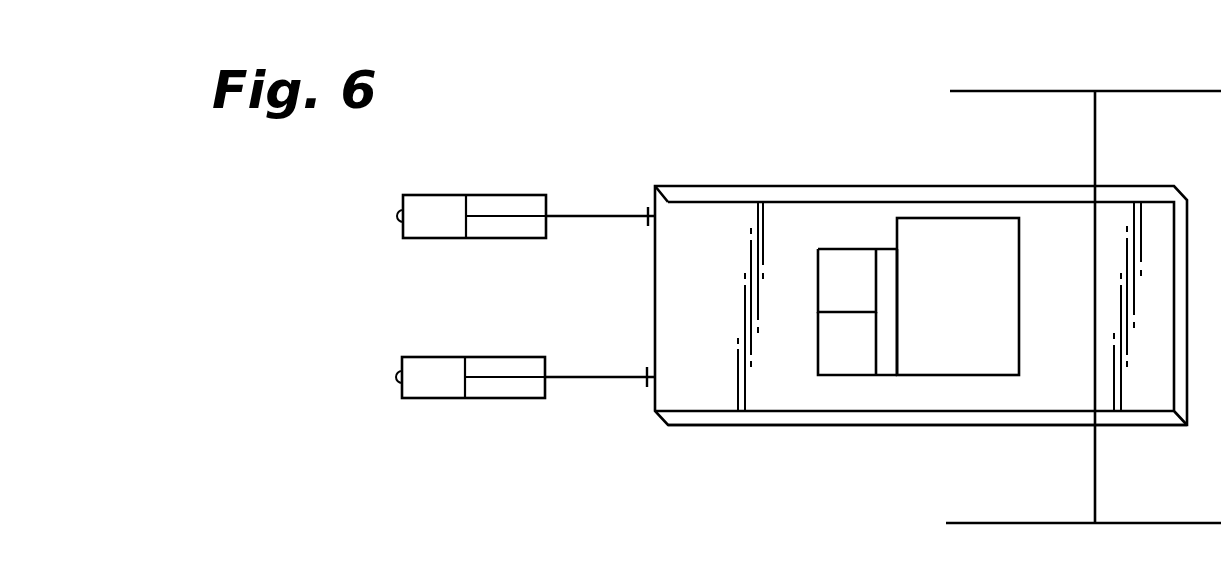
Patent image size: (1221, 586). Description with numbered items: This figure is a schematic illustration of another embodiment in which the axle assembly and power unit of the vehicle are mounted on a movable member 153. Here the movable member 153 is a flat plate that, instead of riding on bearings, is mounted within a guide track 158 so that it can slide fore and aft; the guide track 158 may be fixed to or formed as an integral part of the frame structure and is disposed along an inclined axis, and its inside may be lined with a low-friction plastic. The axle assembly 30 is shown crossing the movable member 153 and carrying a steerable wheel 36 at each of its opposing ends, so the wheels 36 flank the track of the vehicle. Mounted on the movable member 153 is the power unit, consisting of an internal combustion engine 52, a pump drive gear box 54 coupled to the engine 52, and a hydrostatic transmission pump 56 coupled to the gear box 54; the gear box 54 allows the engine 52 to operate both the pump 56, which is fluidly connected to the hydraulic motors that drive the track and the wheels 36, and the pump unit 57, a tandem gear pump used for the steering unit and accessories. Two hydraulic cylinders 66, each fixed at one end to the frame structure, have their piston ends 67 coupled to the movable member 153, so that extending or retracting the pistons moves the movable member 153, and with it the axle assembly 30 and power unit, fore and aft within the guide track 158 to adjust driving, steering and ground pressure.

The axle assembly 30 is at (1096, 145).
The wheel 36 is at (1166, 91).
The internal combustion engine 52 is at (946, 303).
The pump drive gear box 54 is at (884, 249).
The hydrostatic transmission pump 56 is at (833, 357).
The pump unit 57 is at (833, 294).
The hydraulic cylinder 66 is at (425, 195).
The piston end 67 is at (585, 216).
The movable member 153 is at (704, 213).
The guide track 158 is at (757, 417).